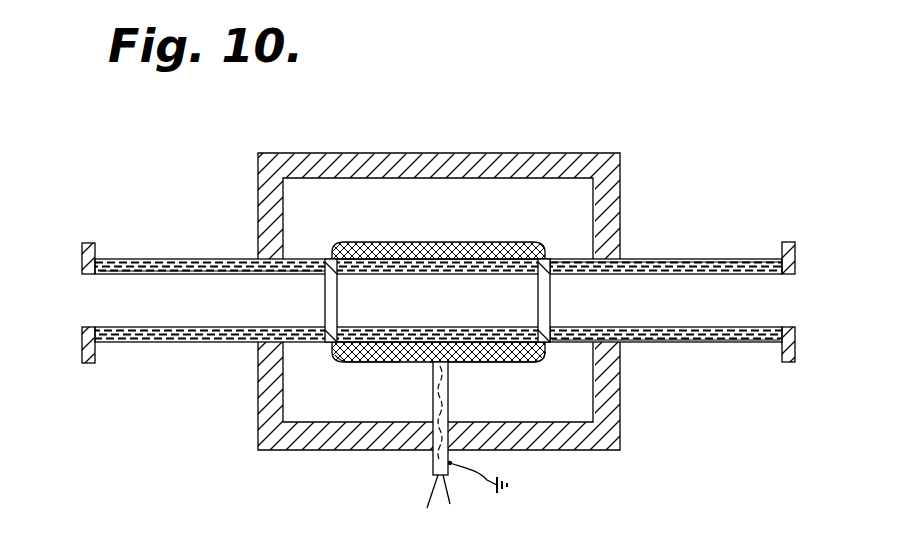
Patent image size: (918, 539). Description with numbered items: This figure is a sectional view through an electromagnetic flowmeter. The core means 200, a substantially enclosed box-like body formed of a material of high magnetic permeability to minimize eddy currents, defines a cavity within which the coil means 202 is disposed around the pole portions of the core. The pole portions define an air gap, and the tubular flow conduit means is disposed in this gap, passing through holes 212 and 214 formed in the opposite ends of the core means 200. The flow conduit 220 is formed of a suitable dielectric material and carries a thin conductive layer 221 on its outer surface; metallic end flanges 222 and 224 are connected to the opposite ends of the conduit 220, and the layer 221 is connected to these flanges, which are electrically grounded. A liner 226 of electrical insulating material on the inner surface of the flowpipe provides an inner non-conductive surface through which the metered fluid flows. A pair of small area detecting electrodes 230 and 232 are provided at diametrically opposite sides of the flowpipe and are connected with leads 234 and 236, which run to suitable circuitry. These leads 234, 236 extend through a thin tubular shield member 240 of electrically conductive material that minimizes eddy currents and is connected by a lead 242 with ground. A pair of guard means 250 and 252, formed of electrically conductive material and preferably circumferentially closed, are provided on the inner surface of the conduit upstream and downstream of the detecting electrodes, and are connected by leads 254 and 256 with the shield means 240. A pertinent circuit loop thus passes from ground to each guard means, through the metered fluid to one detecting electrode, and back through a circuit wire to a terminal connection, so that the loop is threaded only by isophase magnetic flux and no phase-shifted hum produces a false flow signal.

The core means 200 is at (483, 151).
The coil means 202 is at (438, 303).
The hole 212 is at (257, 282).
The hole 214 is at (616, 272).
The flow conduit 220 is at (713, 343).
The thin conductive layer 221 is at (708, 260).
The metallic end flange 222 is at (84, 243).
The metallic end flange 224 is at (796, 249).
The inner liner 226 is at (160, 284).
The detecting electrode 230 is at (456, 242).
The detecting electrode 232 is at (470, 308).
The lead 234 is at (427, 498).
The lead 236 is at (448, 492).
The tubular shield member 240 is at (450, 405).
The lead 242 is at (487, 480).
The guard means 250 is at (330, 318).
The guard means 252 is at (551, 312).
The lead 254 is at (381, 355).
The lead 256 is at (477, 357).